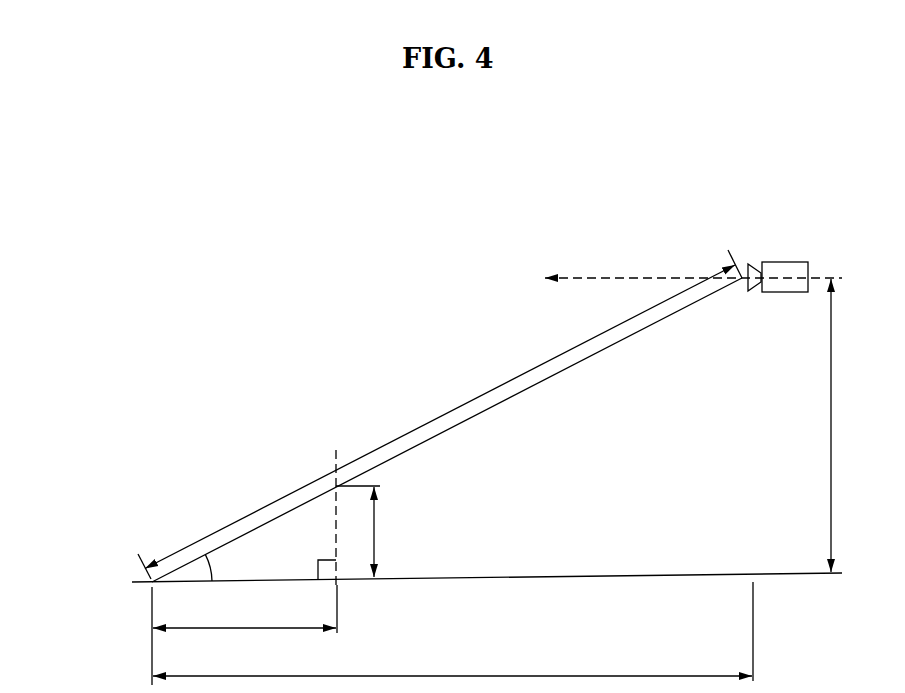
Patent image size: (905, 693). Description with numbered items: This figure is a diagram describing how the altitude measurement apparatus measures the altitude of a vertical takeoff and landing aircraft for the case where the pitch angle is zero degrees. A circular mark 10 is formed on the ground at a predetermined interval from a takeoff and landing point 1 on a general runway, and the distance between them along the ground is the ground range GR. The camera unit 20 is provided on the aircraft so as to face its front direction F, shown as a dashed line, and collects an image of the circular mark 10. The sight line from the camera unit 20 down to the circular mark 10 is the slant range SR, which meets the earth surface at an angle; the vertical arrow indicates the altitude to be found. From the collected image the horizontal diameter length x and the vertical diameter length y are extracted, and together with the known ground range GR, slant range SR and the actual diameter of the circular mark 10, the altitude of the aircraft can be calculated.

The takeoff and landing point 1 is at (831, 576).
The circular mark 10 is at (132, 582).
The camera unit 20 is at (784, 262).
The slant range SR is at (440, 417).
The front direction F is at (625, 278).
The ground range GR is at (453, 631).
The horizontal diameter length x is at (244, 635).
The vertical diameter length y is at (386, 532).